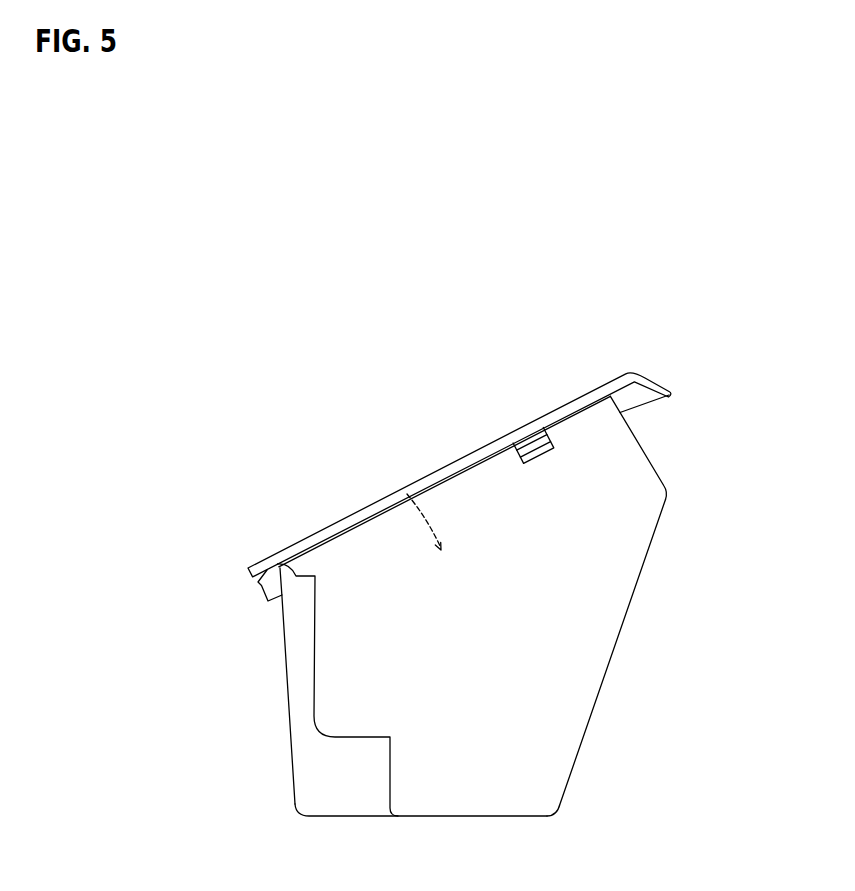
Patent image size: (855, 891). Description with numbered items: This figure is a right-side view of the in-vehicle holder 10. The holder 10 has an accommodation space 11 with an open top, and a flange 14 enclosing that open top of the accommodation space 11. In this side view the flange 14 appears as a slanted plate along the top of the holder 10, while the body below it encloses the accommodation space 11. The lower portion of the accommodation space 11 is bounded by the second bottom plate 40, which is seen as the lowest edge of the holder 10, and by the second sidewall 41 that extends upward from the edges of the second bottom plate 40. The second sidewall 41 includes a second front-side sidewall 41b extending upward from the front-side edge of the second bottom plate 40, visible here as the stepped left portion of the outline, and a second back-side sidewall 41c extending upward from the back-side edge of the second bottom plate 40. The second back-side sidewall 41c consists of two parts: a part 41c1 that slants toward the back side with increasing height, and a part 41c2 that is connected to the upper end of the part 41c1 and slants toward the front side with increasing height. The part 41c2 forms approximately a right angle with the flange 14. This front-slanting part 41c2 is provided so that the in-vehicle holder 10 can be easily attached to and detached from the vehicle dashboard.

The in-vehicle holder 10 is at (252, 387).
The accommodation space 11 is at (402, 489).
The flange 14 is at (273, 554).
The second bottom plate 40 is at (375, 818).
The second sidewall 41 is at (480, 622).
The second front-side sidewall 41b is at (286, 688).
The second back-side sidewall 41c is at (667, 606).
The part slanting toward the back side 41c1 is at (614, 657).
The part slanting toward the front side 41c2 is at (646, 455).